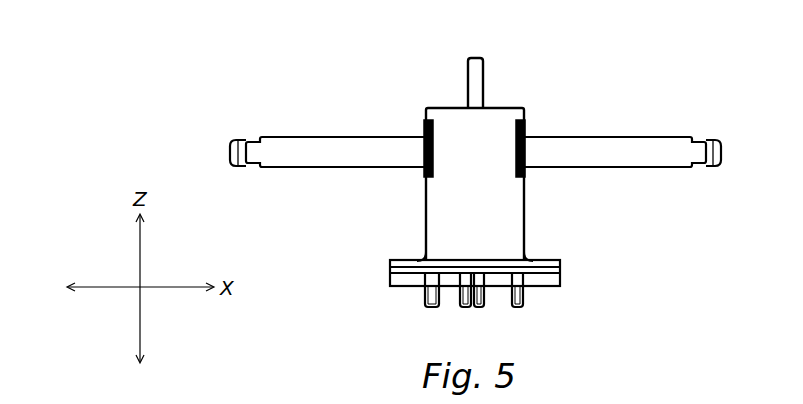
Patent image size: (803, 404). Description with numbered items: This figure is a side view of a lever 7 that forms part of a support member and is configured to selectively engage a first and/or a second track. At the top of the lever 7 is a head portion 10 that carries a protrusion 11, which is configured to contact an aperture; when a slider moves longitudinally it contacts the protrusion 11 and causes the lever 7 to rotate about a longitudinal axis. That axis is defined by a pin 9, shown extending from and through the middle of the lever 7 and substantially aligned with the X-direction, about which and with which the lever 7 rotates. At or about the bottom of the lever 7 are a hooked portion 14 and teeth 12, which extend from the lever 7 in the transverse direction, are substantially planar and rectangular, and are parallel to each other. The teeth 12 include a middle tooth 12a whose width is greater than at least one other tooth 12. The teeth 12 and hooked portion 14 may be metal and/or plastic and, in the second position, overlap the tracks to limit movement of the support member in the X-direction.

The lever 7 is at (544, 102).
The pin 9 is at (292, 150).
The head portion 10 is at (562, 281).
The protrusion 11 is at (485, 74).
The tooth 12 is at (427, 300).
The middle tooth 12a is at (478, 307).
The hooked portion 14 is at (437, 262).